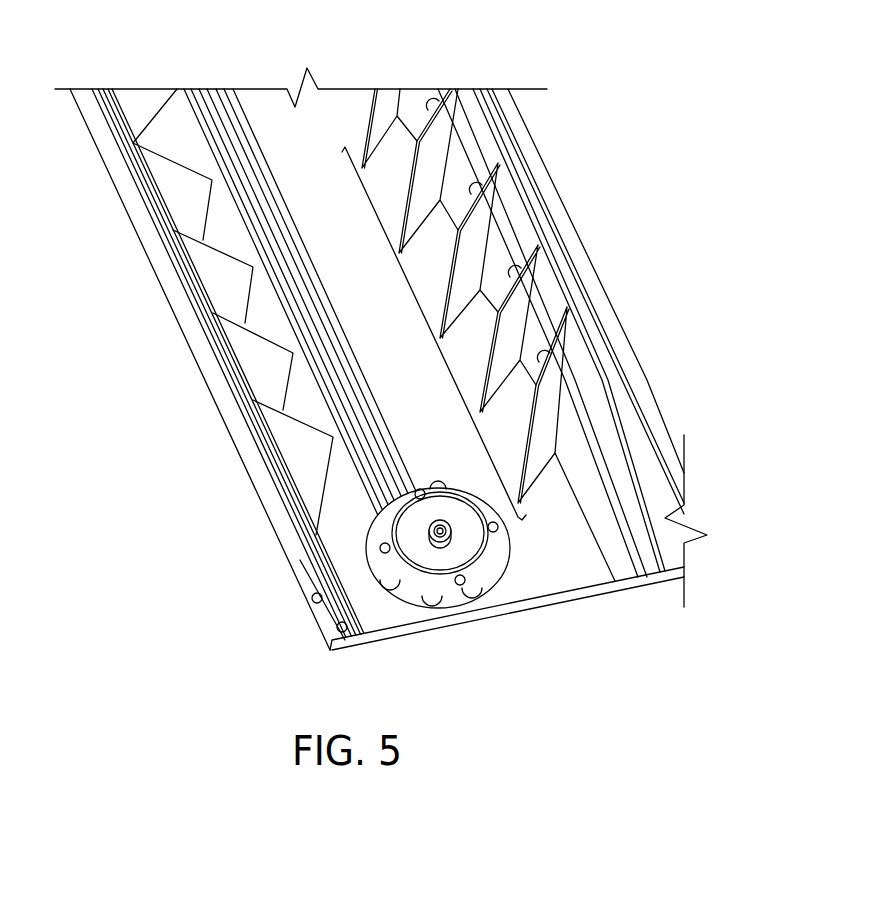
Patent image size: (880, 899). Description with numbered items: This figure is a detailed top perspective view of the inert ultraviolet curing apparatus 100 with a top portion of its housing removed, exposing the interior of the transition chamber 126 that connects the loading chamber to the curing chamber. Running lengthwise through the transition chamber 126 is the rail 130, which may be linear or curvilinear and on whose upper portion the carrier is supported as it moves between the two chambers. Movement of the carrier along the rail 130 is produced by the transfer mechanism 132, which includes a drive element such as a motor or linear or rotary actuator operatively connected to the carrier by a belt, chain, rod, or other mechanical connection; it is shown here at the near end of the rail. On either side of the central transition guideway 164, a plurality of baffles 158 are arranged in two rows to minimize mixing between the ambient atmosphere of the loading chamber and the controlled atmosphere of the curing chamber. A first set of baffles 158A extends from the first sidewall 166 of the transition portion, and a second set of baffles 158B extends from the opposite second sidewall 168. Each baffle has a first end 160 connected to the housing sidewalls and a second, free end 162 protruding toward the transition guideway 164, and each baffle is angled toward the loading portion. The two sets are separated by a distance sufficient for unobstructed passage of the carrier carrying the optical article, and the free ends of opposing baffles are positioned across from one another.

The curing apparatus 100 is at (410, 332).
The transition chamber 126 is at (305, 145).
The rail 130 is at (306, 330).
The transfer mechanism 132 is at (466, 547).
The baffles 158 is at (550, 400).
The first set of baffles 158A is at (428, 332).
The second set of baffles 158B is at (232, 170).
The first end 160 is at (573, 327).
The second, free end 162 is at (560, 502).
The transition guideway 164 is at (340, 543).
The first sidewall 166 is at (524, 140).
The second sidewall 168 is at (160, 259).